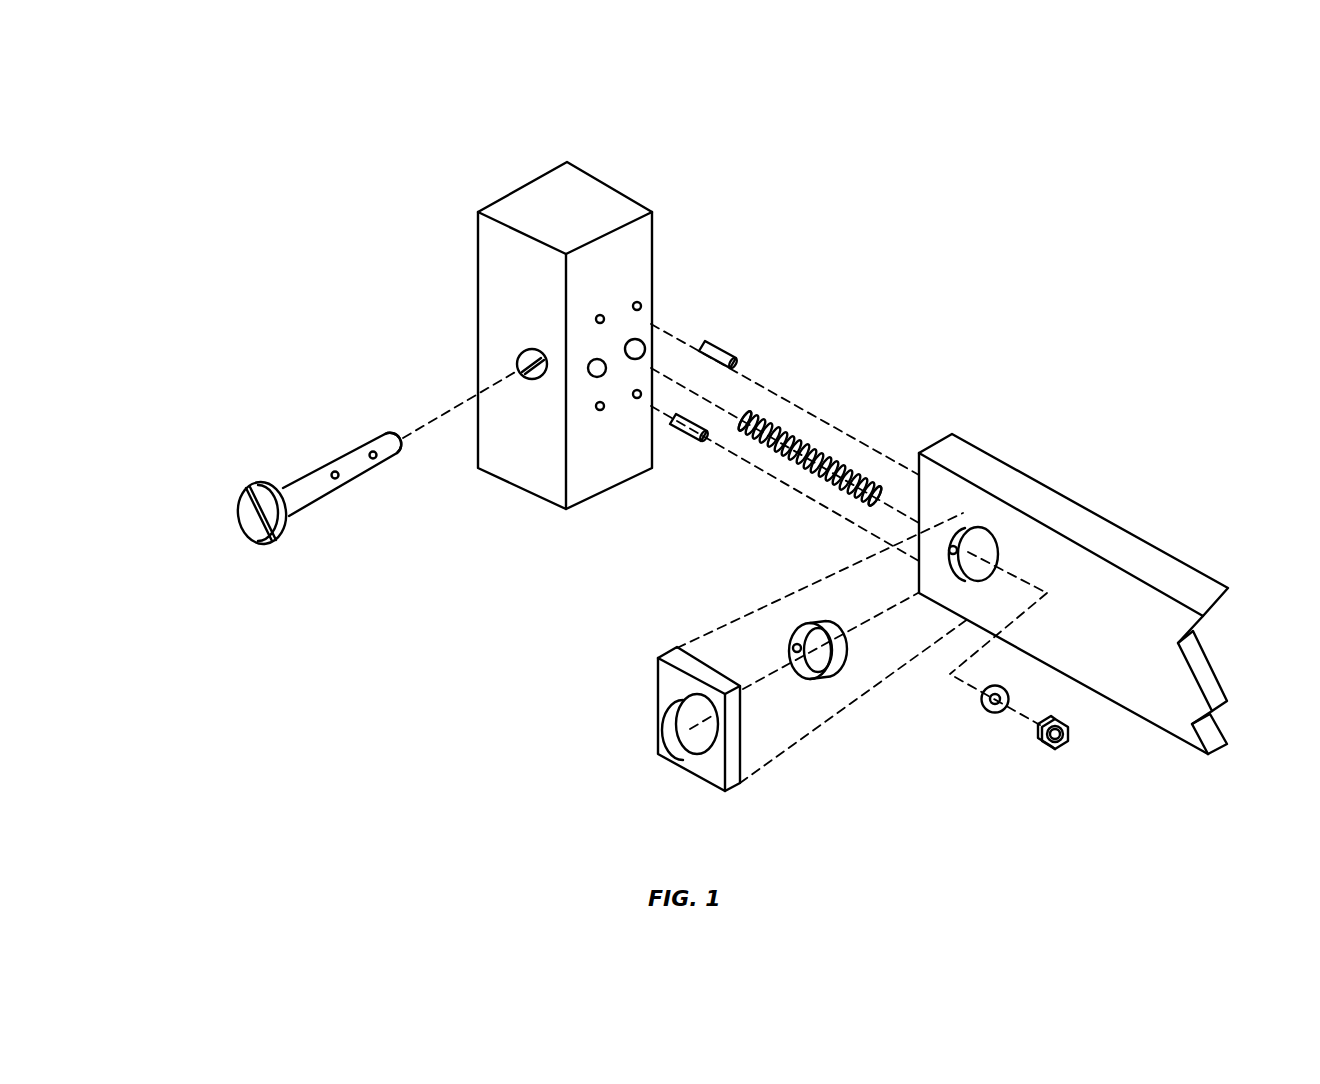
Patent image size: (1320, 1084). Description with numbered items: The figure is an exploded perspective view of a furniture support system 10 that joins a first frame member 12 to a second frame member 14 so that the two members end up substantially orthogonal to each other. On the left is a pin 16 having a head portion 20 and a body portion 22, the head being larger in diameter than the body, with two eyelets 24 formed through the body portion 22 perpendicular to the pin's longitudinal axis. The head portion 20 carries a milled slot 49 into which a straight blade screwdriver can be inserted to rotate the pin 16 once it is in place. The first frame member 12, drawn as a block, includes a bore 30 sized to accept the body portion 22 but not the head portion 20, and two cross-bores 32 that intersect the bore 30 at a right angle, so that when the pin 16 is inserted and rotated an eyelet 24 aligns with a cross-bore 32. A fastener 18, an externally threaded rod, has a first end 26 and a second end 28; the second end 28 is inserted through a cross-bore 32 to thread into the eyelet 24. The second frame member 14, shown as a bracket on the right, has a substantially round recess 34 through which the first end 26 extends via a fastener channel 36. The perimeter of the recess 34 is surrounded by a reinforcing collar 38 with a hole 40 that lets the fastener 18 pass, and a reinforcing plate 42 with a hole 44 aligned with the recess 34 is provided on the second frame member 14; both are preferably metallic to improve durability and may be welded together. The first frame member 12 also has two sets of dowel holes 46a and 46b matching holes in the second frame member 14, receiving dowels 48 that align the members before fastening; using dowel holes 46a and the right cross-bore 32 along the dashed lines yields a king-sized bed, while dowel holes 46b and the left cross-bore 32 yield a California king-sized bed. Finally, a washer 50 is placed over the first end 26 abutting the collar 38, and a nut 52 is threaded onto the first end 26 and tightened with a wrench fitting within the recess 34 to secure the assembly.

The furniture support system 10 is at (952, 240).
The first frame member 12 is at (516, 488).
The second frame member 14 is at (1108, 518).
The pin 16 is at (301, 477).
The fastener 18 is at (794, 446).
The head portion 20 is at (275, 545).
The body portion 22 is at (352, 449).
The eyelet 24 is at (376, 458).
The first end 26 is at (875, 488).
The second end 28 is at (749, 438).
The bore 30 is at (518, 363).
The cross-bore 32 is at (641, 339).
The recess 34 is at (978, 526).
The fastener channel 36 is at (951, 553).
The reinforcing collar 38 is at (832, 670).
The hole 40 is at (792, 660).
The reinforcing plate 42 is at (690, 772).
The hole 44 is at (675, 722).
The dowel holes 46a is at (633, 391).
The dowel holes 46b is at (596, 319).
The dowel 48 is at (722, 348).
The milled slot 49 is at (242, 491).
The washer 50 is at (997, 712).
The nut 52 is at (1060, 748).